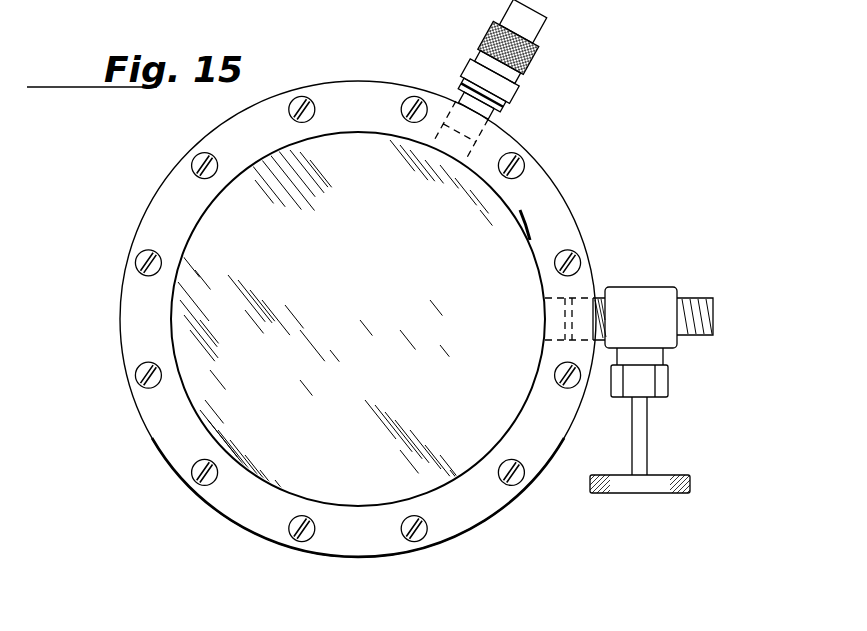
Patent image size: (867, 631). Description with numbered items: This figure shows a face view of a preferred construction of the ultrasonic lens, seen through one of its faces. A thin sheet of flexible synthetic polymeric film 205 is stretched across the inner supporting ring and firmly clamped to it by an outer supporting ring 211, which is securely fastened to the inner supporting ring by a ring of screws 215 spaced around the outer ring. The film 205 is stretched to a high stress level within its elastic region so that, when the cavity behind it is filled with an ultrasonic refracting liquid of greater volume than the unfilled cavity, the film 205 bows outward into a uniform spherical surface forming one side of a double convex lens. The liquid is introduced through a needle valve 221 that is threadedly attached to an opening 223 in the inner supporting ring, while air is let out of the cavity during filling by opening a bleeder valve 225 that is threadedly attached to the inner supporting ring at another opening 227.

The thin sheet of flexible synthetic polymeric film 205 is at (218, 317).
The outer supporting ring 211 is at (158, 412).
The screws 215 is at (297, 528).
The needle valve 221 is at (650, 300).
The opening 223 is at (548, 316).
The bleeder valve 225 is at (542, 49).
The opening 227 is at (437, 130).